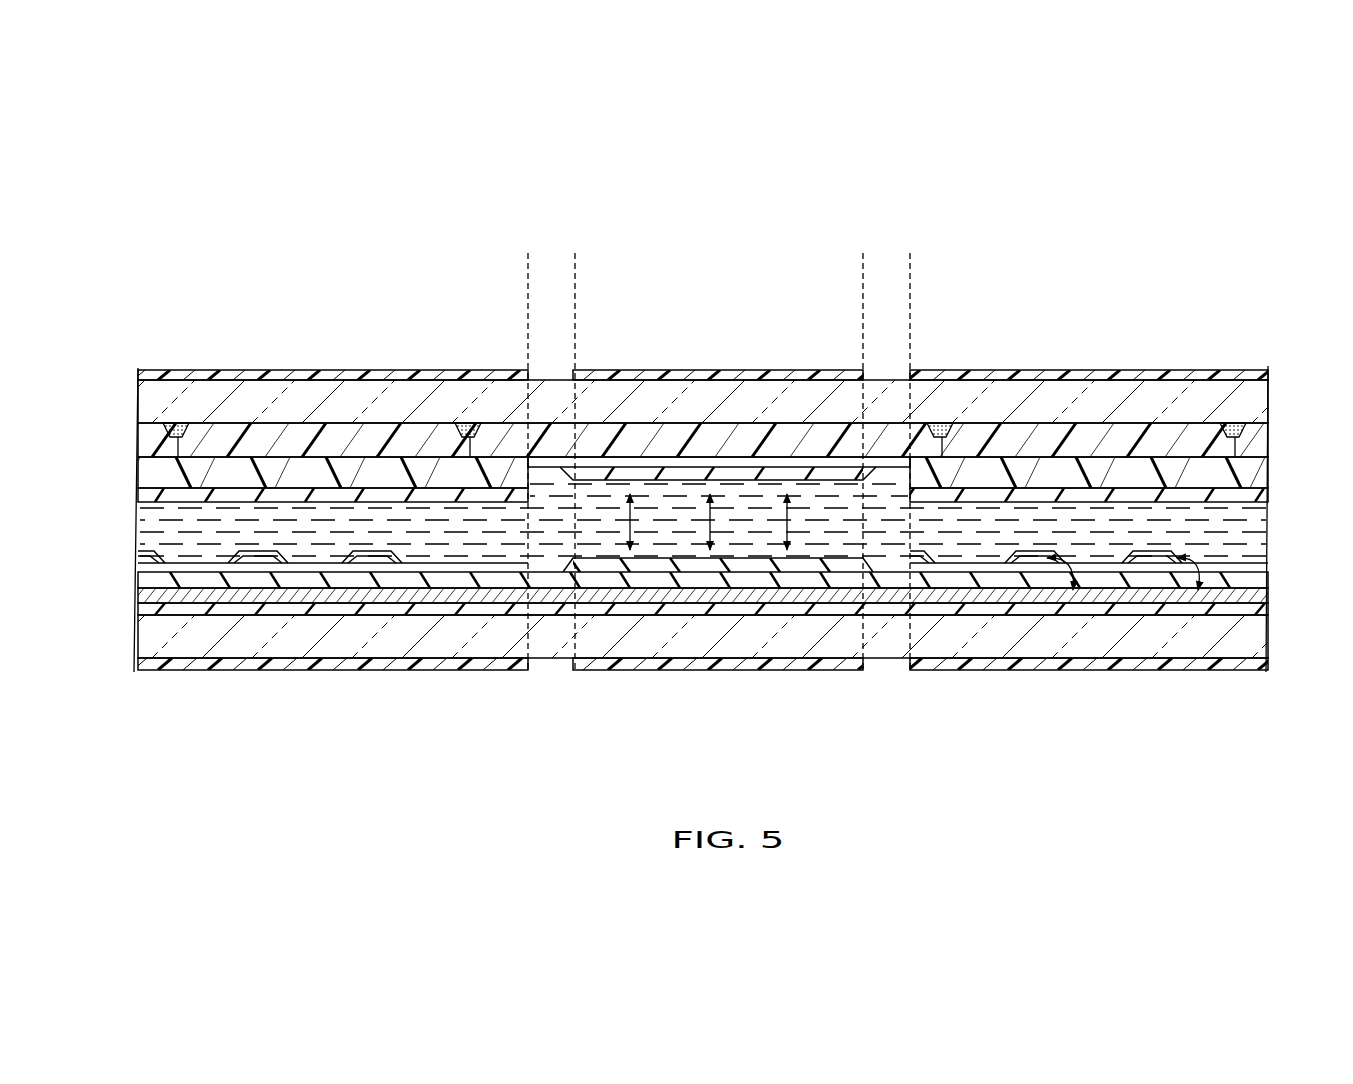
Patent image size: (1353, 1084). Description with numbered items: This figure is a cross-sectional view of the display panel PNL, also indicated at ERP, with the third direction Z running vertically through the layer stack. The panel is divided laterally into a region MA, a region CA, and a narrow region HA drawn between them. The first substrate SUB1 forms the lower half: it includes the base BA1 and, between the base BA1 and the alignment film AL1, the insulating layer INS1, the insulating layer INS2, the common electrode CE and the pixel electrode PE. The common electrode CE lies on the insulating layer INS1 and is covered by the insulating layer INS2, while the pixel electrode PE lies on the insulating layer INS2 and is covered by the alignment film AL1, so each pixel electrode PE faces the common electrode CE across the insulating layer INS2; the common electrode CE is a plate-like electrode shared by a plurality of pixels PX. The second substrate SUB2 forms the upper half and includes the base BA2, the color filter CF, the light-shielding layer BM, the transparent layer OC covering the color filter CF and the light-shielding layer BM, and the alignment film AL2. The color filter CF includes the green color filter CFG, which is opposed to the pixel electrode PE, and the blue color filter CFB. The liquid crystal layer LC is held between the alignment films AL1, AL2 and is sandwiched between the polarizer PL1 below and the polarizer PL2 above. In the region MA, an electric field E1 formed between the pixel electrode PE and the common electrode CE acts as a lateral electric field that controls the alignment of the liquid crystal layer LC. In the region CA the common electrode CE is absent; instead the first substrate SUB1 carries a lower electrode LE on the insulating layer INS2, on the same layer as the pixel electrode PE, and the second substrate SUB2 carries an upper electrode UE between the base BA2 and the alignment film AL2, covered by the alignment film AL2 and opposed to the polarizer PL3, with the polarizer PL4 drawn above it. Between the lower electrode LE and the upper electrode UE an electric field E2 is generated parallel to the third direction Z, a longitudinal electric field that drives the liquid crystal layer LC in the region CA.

The third direction Z is at (61, 337).
The region MA is at (523, 275).
The hole area / peripheral area HA is at (571, 275).
The region CA is at (579, 275).
The electronic device / electro-optical region ERP is at (585, 200).
The display panel PNL is at (717, 200).
The polarizer PL2 is at (148, 375).
The fourth polarizer PL4 is at (655, 372).
The base BA2 is at (148, 402).
The color filter CF is at (325, 437).
The green color filter CFG is at (325, 390).
The blue color filter CFB is at (489, 390).
The light-shielding layer BM is at (163, 431).
The transparent layer OC is at (148, 471).
The alignment film AL2 is at (148, 496).
The upper electrode UE is at (820, 470).
The liquid crystal layer LC is at (148, 525).
The electric field E2 is at (796, 518).
The alignment film AL1 is at (205, 567).
The pixel electrode PE is at (256, 560).
The lower electrode LE is at (716, 572).
The electric field E1 is at (1071, 552).
The insulating layer INS2 is at (148, 581).
The common electrode CE is at (148, 597).
The pixel PX is at (326, 600).
The insulating layer INS1 is at (148, 610).
The base BA1 is at (148, 643).
The polarizer PL1 is at (193, 670).
The polarizer PL3 is at (594, 670).
The second substrate SUB2 is at (1272, 378).
The first substrate SUB1 is at (1272, 553).